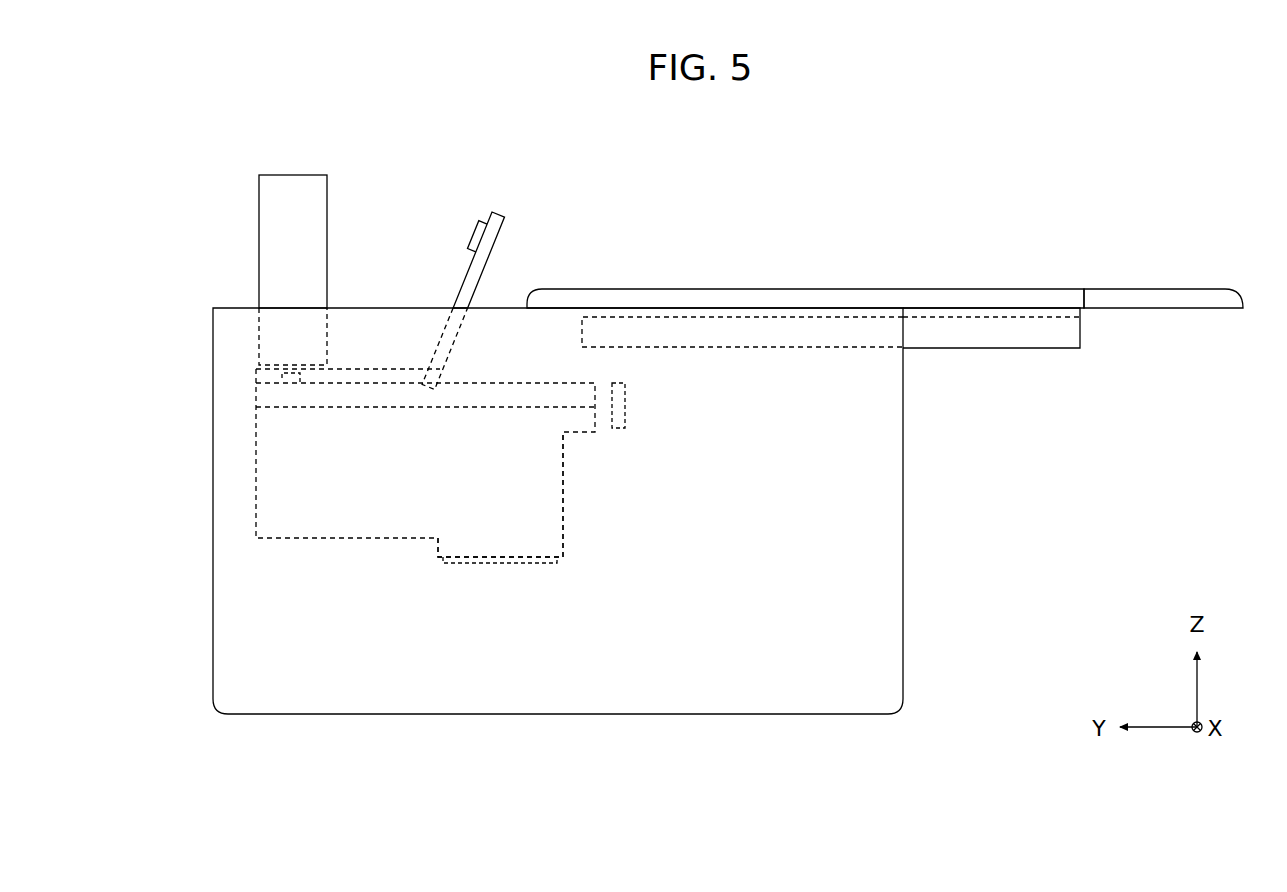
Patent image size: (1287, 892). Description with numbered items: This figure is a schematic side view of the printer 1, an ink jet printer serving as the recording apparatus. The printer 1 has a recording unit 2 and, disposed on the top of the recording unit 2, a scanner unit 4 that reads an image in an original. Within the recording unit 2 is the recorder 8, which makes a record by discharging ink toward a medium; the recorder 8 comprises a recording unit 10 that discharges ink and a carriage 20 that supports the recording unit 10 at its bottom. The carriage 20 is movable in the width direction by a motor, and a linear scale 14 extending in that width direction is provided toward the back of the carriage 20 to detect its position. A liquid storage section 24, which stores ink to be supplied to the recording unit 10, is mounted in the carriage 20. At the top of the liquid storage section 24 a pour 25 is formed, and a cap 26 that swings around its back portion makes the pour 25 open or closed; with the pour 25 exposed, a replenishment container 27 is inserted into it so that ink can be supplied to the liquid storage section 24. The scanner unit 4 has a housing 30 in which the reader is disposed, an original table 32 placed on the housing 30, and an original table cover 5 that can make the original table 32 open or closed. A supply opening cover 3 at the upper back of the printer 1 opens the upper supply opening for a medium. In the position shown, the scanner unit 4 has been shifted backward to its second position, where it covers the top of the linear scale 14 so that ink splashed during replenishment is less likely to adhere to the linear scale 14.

The printer 1 is at (203, 252).
The recording unit 2 is at (903, 560).
The supply opening cover 3 is at (1147, 289).
The scanner unit 4 is at (1052, 260).
The original table cover 5 is at (927, 290).
The recorder 8 is at (532, 630).
The recording unit 10 is at (513, 563).
The linear scale 14 is at (627, 407).
The carriage 20 is at (563, 492).
The liquid storage section 24 is at (493, 383).
The pour 25 is at (315, 381).
The cap 26 is at (505, 230).
The replenishment container 27 is at (328, 190).
The housing 30 is at (880, 348).
The original table 32 is at (804, 310).